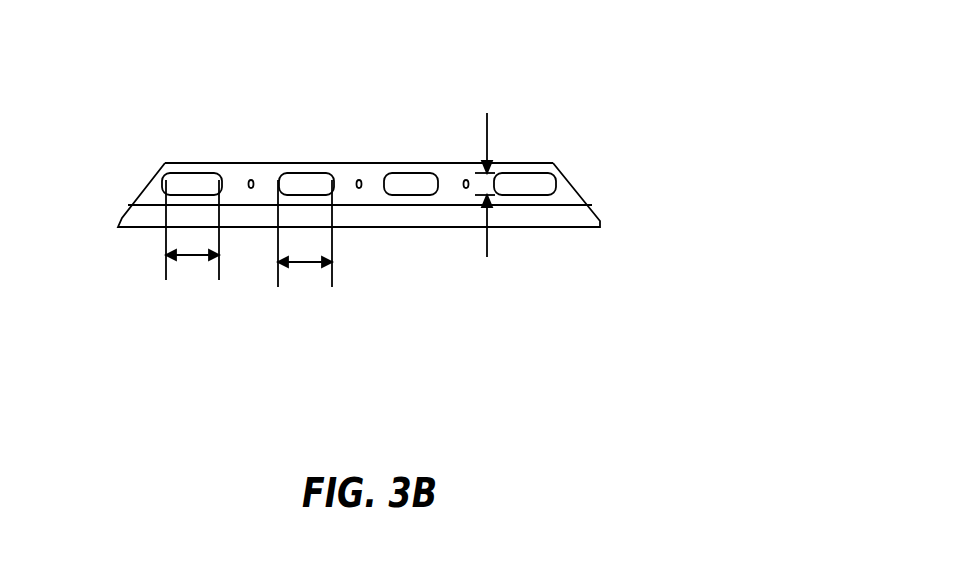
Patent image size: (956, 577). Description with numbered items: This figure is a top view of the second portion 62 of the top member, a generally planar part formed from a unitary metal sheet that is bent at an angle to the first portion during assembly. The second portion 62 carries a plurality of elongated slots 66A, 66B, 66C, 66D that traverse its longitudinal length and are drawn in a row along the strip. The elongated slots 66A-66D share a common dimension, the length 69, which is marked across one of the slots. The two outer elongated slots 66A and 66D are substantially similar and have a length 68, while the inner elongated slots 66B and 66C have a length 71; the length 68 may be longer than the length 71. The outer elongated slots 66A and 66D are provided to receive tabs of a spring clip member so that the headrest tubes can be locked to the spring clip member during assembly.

The second portion 62 is at (565, 188).
The elongated slot 66A is at (517, 180).
The elongated slot 66B is at (410, 180).
The elongated slot 66C is at (310, 180).
The elongated slot 66D is at (198, 180).
The length 68 is at (203, 256).
The length 69 is at (487, 237).
The length 71 is at (310, 263).